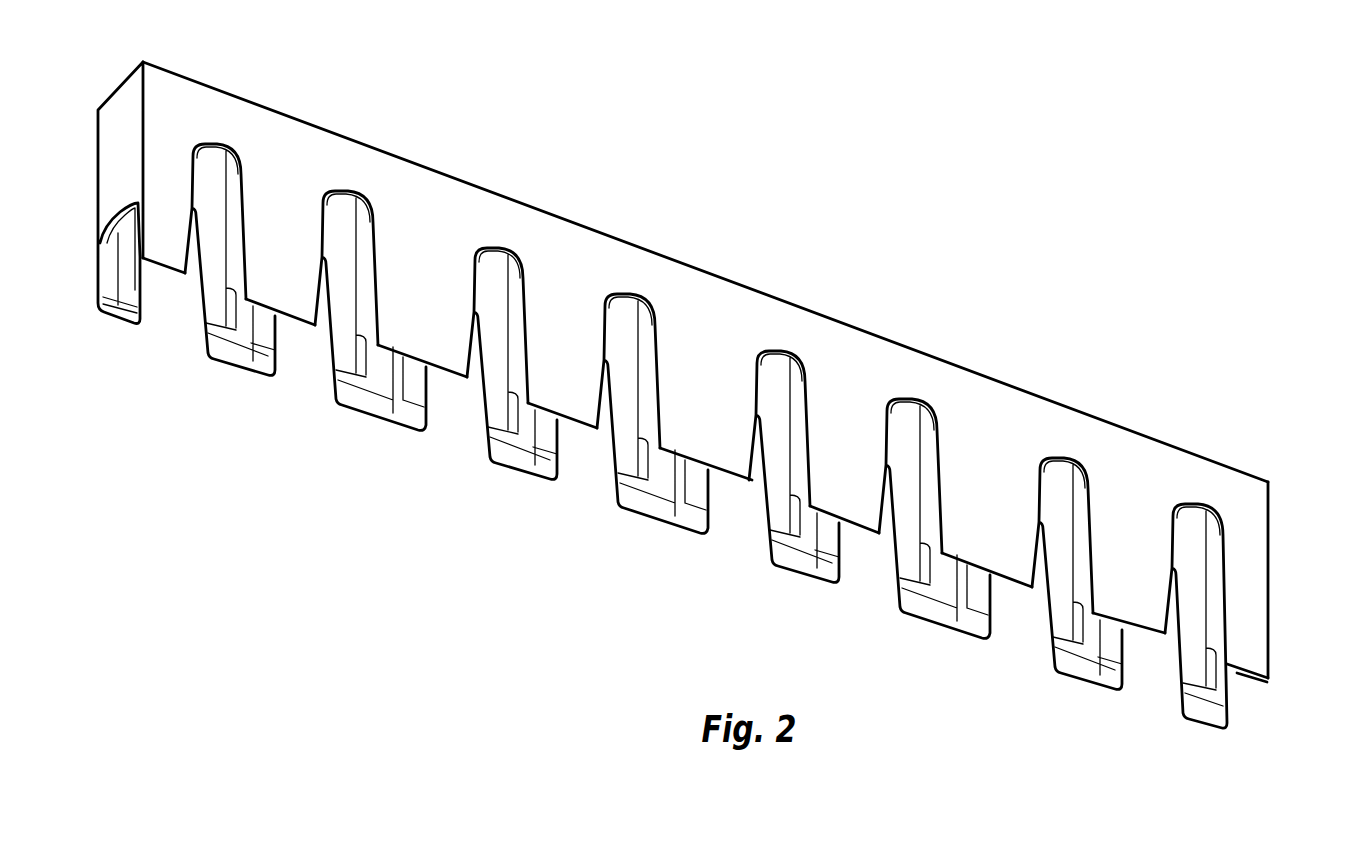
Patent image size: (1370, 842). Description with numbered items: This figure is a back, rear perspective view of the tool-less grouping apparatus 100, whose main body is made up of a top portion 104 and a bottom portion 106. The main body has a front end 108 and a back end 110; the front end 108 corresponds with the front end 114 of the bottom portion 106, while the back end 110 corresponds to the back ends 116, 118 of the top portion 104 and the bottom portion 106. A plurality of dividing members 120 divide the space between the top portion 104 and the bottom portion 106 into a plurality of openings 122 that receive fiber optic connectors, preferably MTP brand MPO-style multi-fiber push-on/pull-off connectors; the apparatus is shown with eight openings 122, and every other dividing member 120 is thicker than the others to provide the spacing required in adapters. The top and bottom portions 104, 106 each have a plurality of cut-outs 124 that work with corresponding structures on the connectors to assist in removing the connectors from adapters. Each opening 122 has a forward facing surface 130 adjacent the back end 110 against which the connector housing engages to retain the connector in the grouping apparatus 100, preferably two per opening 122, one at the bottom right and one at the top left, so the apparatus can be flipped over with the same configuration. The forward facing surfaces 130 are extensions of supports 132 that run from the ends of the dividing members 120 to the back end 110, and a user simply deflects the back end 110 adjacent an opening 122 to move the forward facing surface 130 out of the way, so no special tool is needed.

The tool-less grouping apparatus 100 is at (727, 421).
The top portion 104 is at (861, 350).
The bottom portion 106 is at (833, 565).
The front end 108 is at (1136, 375).
The back end 110 is at (1145, 702).
The front end of the bottom portion 114 is at (1214, 457).
The back end of the top portion 116 is at (1243, 673).
The back end of the bottom portion 118 is at (953, 632).
The dividing member 120 is at (517, 348).
The opening 122 is at (587, 457).
The cut-out 124 is at (190, 210).
The forward facing surface 130 is at (1060, 625).
The support 132 is at (652, 490).